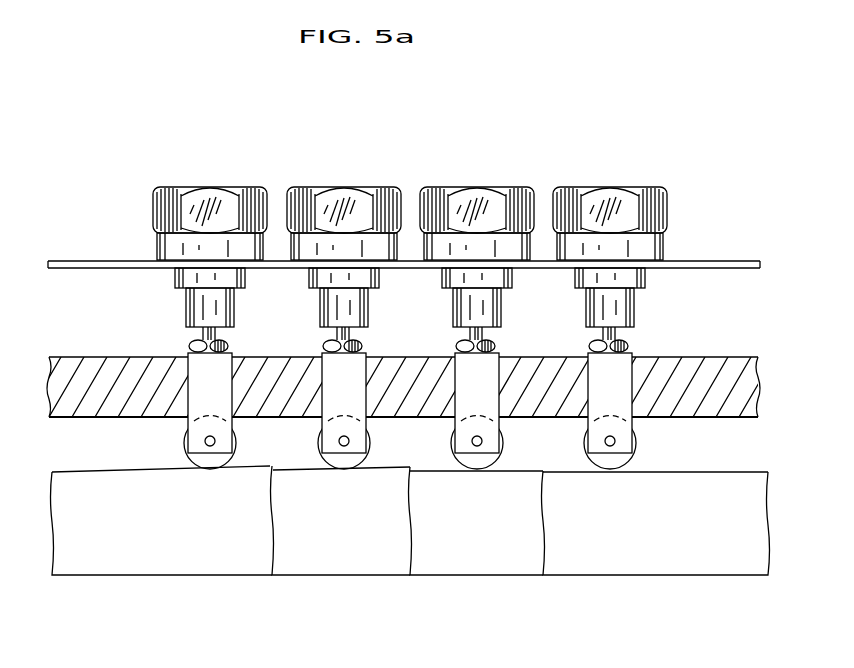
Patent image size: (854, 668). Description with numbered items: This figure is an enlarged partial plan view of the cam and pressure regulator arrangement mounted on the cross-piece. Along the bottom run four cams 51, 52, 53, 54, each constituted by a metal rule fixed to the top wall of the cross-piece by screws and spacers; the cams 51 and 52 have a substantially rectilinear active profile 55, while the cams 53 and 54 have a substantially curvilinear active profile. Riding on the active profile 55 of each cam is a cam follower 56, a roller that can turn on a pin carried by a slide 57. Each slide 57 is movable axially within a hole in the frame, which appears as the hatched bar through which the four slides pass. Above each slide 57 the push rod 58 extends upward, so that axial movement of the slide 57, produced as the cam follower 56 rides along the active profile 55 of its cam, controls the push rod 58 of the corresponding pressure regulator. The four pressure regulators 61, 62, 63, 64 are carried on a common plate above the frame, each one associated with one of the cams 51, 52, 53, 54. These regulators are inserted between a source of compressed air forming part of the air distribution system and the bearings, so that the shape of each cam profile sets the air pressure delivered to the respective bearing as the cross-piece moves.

The cam 51 is at (642, 530).
The cam 52 is at (483, 530).
The cam 53 is at (348, 530).
The cam 54 is at (153, 530).
The active profile 55 is at (108, 470).
The cam follower 56 is at (597, 463).
The slide 57 is at (621, 397).
The push rod 58 is at (604, 338).
The pressure regulator 61 is at (596, 200).
The pressure regulator 62 is at (463, 199).
The pressure regulator 63 is at (328, 200).
The pressure regulator 64 is at (193, 200).